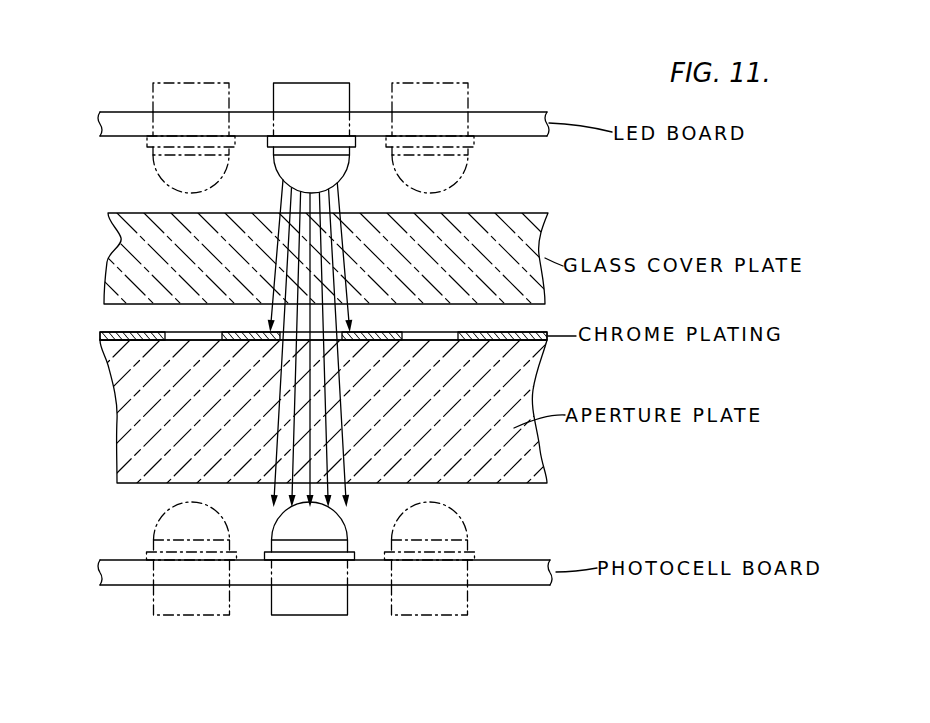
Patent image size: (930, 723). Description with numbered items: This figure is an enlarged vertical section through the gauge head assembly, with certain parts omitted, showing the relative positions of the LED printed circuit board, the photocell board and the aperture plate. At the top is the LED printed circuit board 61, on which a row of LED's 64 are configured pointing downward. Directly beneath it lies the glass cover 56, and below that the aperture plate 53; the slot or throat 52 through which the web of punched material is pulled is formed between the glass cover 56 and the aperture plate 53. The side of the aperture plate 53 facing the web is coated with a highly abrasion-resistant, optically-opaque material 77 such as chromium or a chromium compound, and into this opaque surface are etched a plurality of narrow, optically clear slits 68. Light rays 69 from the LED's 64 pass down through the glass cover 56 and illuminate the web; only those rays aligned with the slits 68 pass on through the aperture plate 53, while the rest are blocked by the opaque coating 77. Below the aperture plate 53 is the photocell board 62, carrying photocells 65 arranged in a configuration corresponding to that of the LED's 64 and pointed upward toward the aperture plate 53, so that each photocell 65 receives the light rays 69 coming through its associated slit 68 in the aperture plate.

The slot or throat 52 is at (95, 316).
The aperture plate 53 is at (116, 424).
The glass cover 56 is at (112, 258).
The LED printed circuit board 61 is at (100, 123).
The photocell board 62 is at (99, 572).
The LED 64 is at (300, 70).
The photocell 65 is at (182, 626).
The slit 68 is at (199, 332).
The light ray 69 is at (320, 212).
The optically-opaque material 77 is at (99, 341).